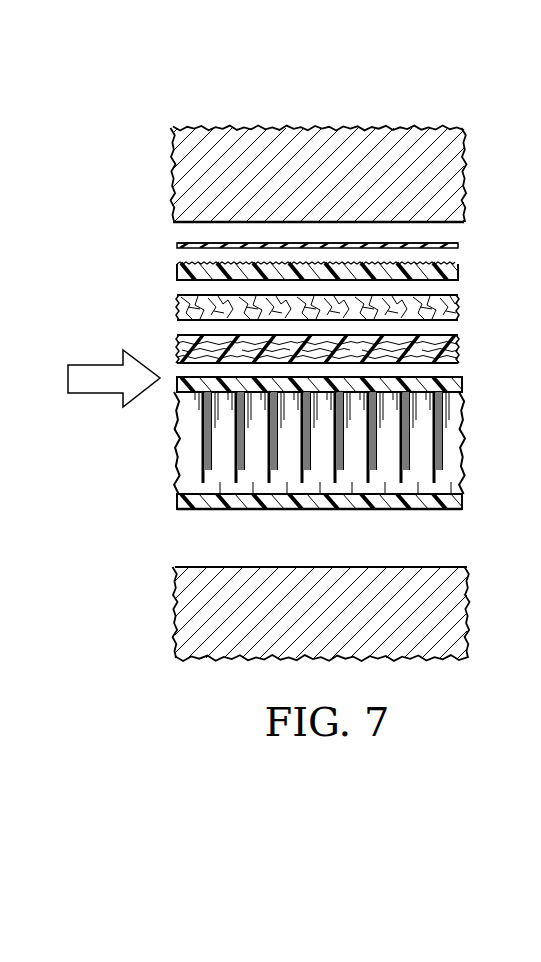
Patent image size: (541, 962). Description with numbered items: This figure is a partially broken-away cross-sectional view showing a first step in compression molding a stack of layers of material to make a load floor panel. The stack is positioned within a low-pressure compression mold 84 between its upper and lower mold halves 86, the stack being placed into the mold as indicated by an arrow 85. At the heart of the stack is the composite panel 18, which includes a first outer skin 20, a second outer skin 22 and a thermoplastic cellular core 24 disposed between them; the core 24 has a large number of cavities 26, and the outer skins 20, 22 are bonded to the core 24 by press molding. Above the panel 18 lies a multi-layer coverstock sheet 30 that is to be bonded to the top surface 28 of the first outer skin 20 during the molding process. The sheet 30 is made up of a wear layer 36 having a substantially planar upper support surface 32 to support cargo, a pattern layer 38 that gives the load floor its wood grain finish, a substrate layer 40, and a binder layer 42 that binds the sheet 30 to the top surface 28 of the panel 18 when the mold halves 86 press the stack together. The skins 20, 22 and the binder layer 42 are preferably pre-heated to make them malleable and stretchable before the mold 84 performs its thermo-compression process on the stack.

The mold 84 is at (273, 88).
The mold halves 86 is at (415, 128).
The wear layer 36 is at (177, 244).
The upper support surface 32 is at (177, 248).
The pattern layer 38 is at (177, 273).
The substrate layer 40 is at (177, 310).
The binder layer 42 is at (462, 342).
The multi-layer coverstock sheet 30 is at (489, 337).
The first outer skin 20 is at (462, 380).
The top surface 28 is at (178, 400).
The composite panel 18 is at (466, 432).
The cavities 26 is at (320, 487).
The core 24 is at (466, 478).
The second outer skin 22 is at (463, 510).
The arrow 85 is at (105, 393).